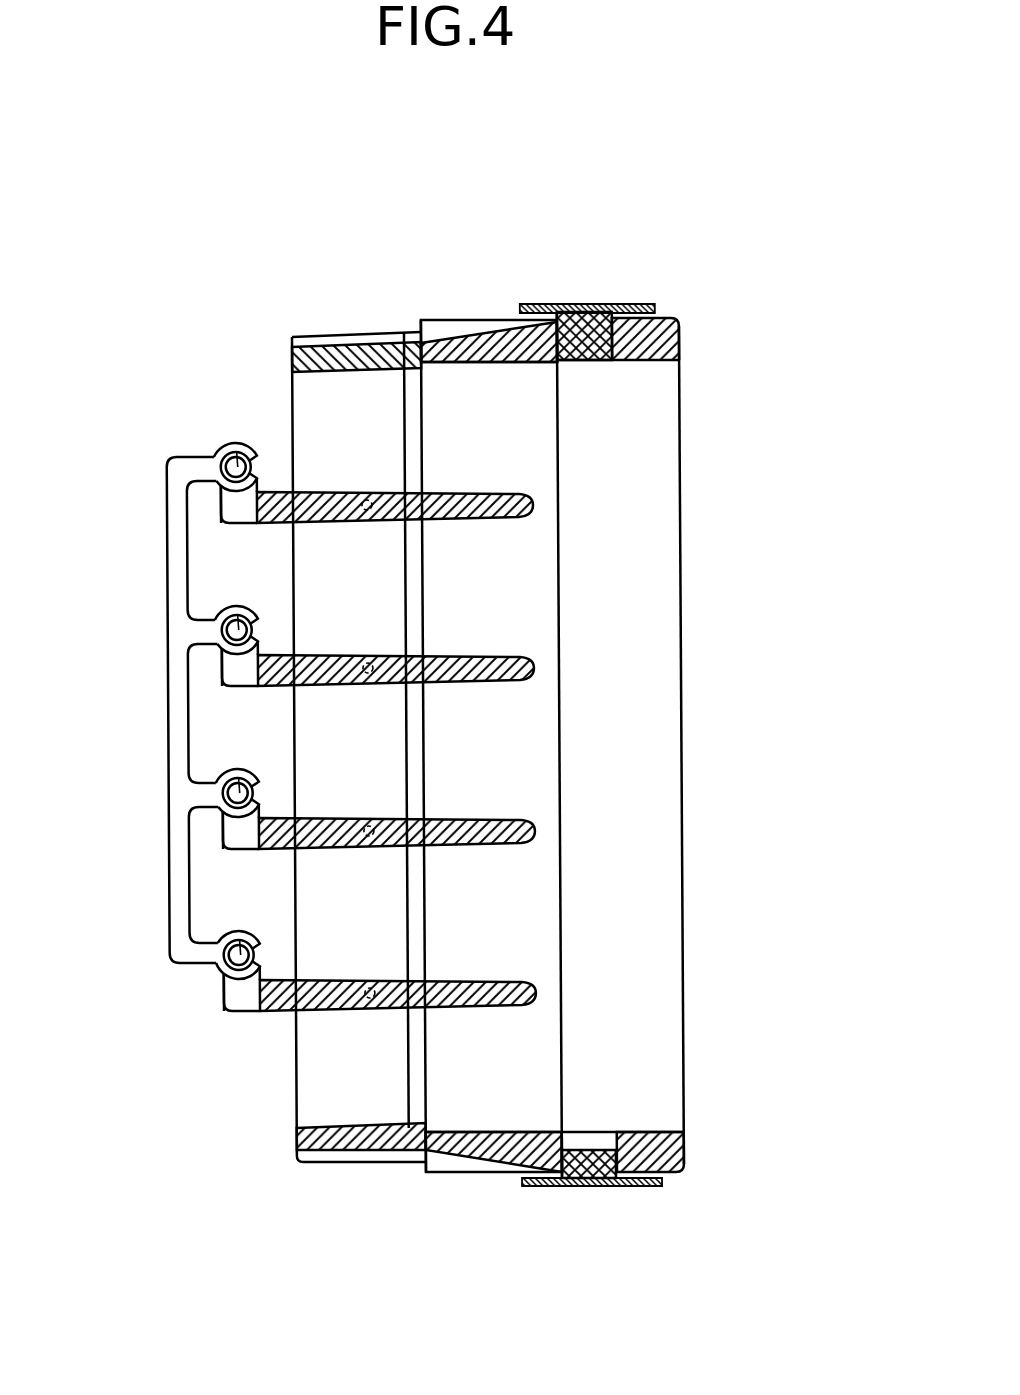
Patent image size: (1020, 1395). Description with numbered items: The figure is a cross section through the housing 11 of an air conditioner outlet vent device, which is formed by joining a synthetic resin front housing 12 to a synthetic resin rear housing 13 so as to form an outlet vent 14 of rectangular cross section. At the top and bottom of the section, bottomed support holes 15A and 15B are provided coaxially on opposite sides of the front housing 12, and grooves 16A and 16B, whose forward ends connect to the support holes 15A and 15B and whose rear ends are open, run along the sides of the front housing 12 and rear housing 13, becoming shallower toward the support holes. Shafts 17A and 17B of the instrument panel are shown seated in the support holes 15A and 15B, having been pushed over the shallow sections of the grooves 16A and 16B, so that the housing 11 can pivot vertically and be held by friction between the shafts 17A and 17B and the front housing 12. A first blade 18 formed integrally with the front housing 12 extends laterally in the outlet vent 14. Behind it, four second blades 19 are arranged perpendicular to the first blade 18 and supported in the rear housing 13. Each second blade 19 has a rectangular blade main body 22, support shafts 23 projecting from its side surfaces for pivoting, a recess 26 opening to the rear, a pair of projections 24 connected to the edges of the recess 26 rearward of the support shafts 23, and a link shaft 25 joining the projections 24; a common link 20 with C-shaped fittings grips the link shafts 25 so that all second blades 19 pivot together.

The housing 11 is at (520, 200).
The front housing 12 is at (487, 336).
The rear housing 13 is at (340, 345).
The outlet vent 14 is at (649, 1136).
The support hole 15A is at (599, 1120).
The support hole 15B is at (605, 360).
The groove 16A is at (354, 1152).
The groove 16B is at (322, 343).
The shaft 17A is at (580, 1185).
The shaft 17B is at (592, 305).
The first blade 18 is at (668, 810).
The second blade 19 is at (507, 489).
The link 20 is at (176, 731).
The blade main body 22 is at (469, 497).
The support shaft 23 is at (362, 488).
The projection 24 is at (220, 503).
The link shaft 25 is at (236, 443).
The recess 26 is at (238, 528).